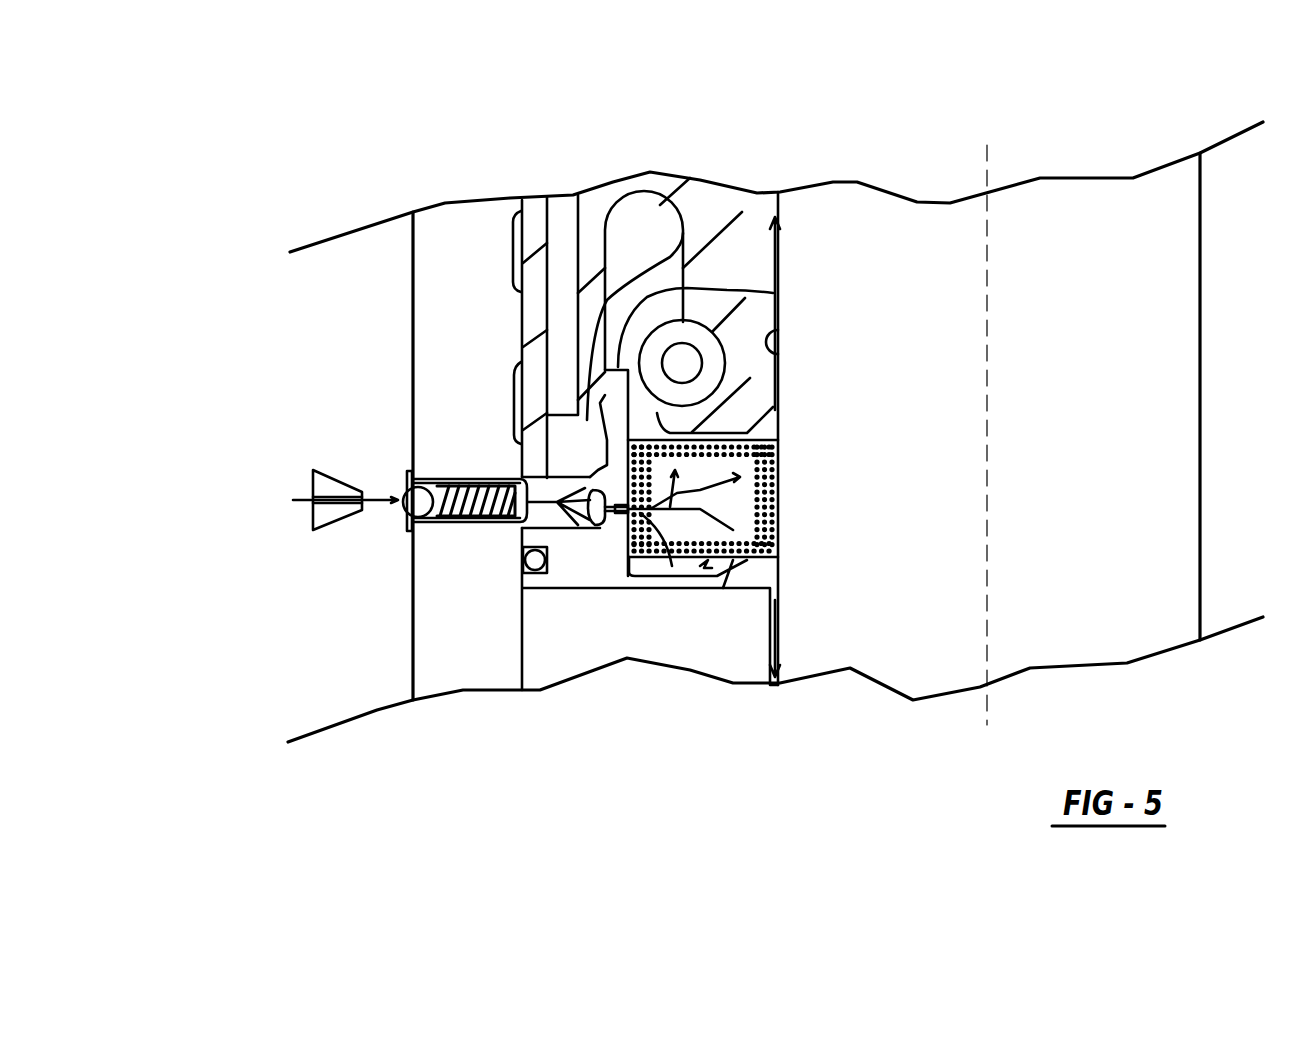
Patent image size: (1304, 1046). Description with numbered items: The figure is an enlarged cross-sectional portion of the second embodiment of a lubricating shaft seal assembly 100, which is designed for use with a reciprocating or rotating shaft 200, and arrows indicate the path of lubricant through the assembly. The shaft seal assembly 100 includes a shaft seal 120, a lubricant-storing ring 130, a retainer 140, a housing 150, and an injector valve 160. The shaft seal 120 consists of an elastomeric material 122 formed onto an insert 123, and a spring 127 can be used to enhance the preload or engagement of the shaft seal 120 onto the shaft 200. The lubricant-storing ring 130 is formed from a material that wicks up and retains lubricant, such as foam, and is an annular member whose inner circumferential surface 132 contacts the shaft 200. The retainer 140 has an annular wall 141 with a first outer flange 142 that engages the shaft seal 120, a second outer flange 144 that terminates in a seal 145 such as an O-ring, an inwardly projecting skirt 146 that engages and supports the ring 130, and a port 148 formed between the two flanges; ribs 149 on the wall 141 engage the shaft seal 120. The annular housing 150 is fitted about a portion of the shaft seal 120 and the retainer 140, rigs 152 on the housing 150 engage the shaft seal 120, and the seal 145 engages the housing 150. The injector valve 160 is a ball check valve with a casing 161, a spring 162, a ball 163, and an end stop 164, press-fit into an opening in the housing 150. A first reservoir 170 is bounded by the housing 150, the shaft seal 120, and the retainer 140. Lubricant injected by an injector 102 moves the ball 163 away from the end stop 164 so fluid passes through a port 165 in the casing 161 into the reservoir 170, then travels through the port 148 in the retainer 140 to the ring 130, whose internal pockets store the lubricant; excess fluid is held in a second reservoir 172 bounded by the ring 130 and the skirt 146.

The lubricating shaft seal assembly 100 is at (639, 746).
The injector 102 is at (269, 465).
The shaft seal 120 is at (498, 140).
The elastomeric material 122 is at (636, 151).
The insert 123 is at (560, 149).
The spring 127 is at (722, 385).
The lubricant-storing ring 130 is at (922, 462).
The inner circumferential surface 132 is at (918, 544).
The retainer 140 is at (685, 661).
The annular wall 141 is at (919, 286).
The first outer flange 142 is at (470, 388).
The second outer flange 144 is at (546, 665).
The seal 145 is at (501, 667).
The inwardly projecting skirt 146 is at (750, 653).
The port 148 is at (599, 633).
The ribs 149 is at (758, 194).
The housing 150 is at (323, 273).
The rigs 152 is at (414, 238).
The injector valve 160 is at (339, 566).
The casing 161 is at (417, 594).
The spring 162 is at (411, 563).
The ball 163 is at (404, 503).
The end stop 164 is at (363, 447).
The port 165 is at (452, 664).
The first reservoir 170 is at (415, 427).
The second reservoir 172 is at (820, 643).
The shaft 200 is at (938, 709).